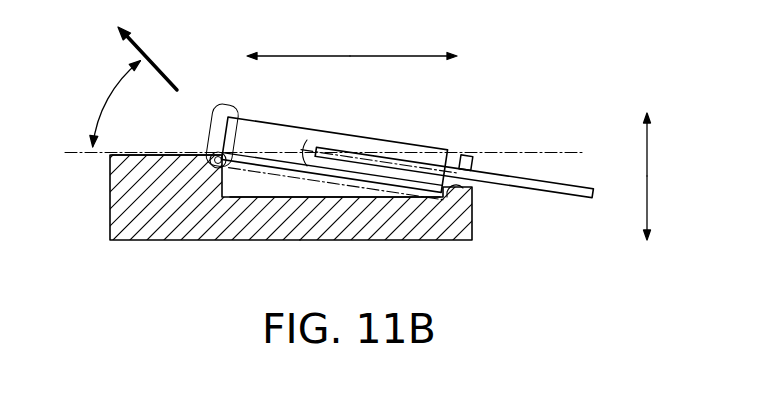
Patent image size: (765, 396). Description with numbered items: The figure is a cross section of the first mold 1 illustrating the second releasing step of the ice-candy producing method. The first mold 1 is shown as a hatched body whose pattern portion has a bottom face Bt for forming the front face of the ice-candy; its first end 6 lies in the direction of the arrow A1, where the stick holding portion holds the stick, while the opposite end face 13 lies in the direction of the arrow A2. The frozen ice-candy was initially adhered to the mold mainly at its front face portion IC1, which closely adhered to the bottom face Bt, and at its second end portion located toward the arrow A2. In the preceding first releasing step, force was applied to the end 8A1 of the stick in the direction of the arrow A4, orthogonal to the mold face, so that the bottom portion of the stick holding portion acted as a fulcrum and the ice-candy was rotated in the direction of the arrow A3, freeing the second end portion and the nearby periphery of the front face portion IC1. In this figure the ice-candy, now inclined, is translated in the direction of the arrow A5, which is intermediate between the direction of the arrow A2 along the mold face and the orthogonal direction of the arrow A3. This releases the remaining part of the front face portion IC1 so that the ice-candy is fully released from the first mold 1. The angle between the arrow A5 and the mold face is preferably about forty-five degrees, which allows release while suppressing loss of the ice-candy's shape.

The first mold 1 is at (154, 152).
The end face 13 is at (110, 194).
The first end 6 is at (473, 213).
The one end of the stick 8A1 is at (567, 186).
The front face portion IC1 is at (303, 150).
The bottom face Bt is at (253, 198).
The arrow A1 is at (405, 43).
The arrow A2 is at (297, 43).
The arrow A3 is at (667, 144).
The arrow A4 is at (667, 209).
The arrow A5 is at (147, 58).